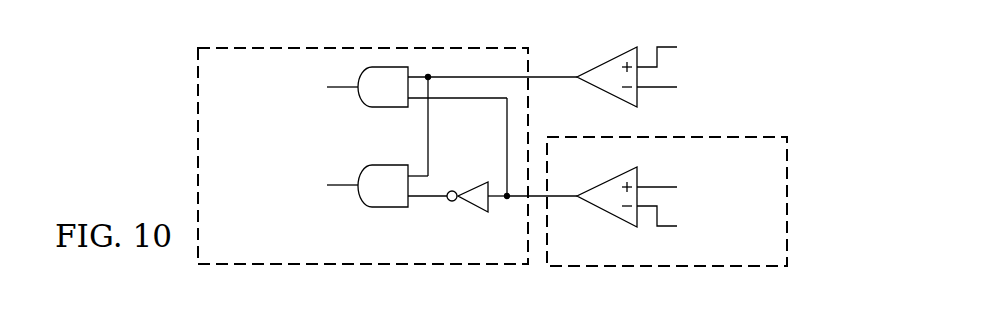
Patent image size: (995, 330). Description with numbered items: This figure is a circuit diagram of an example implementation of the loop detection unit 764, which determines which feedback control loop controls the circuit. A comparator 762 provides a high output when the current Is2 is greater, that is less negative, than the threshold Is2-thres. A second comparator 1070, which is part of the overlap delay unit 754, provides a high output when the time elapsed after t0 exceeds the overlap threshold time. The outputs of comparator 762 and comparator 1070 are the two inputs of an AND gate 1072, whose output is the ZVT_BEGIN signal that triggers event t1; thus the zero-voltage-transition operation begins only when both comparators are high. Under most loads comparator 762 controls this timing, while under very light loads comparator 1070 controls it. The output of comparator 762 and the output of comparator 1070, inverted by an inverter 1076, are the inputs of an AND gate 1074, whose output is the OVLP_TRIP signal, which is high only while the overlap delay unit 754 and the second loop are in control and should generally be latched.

The loop detection unit 764 is at (197, 143).
The overlap delay unit 754 is at (787, 210).
The comparator 762 is at (608, 60).
The comparator 1070 is at (608, 215).
The AND gate 1072 is at (383, 107).
The AND gate 1074 is at (383, 207).
The inverter 1076 is at (472, 212).